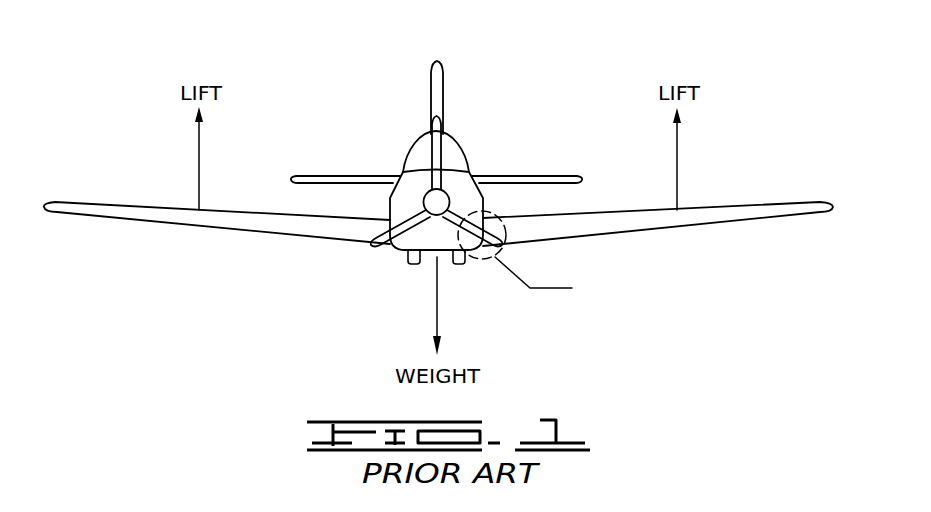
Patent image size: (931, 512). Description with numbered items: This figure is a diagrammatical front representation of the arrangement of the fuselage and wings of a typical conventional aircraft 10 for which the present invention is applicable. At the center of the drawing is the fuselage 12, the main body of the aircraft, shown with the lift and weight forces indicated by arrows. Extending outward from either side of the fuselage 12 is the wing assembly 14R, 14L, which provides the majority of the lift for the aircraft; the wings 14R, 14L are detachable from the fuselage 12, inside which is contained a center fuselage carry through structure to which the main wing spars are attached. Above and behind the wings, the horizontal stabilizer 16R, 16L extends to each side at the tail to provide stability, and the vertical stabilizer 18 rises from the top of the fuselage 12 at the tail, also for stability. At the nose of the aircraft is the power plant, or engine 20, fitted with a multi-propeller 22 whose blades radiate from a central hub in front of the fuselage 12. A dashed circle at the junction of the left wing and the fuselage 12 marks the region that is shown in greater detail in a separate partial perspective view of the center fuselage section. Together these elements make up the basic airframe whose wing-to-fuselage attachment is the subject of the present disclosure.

The aircraft 10 is at (333, 68).
The fuselage 12 is at (360, 203).
The wing assembly 14R is at (147, 205).
The wing assembly 14L is at (740, 207).
The horizontal stabilizer 16R is at (355, 176).
The horizontal stabilizer 16L is at (502, 176).
The vertical stabilizer 18 is at (444, 90).
The engine 20 is at (428, 250).
The multi-propeller 22 is at (373, 242).